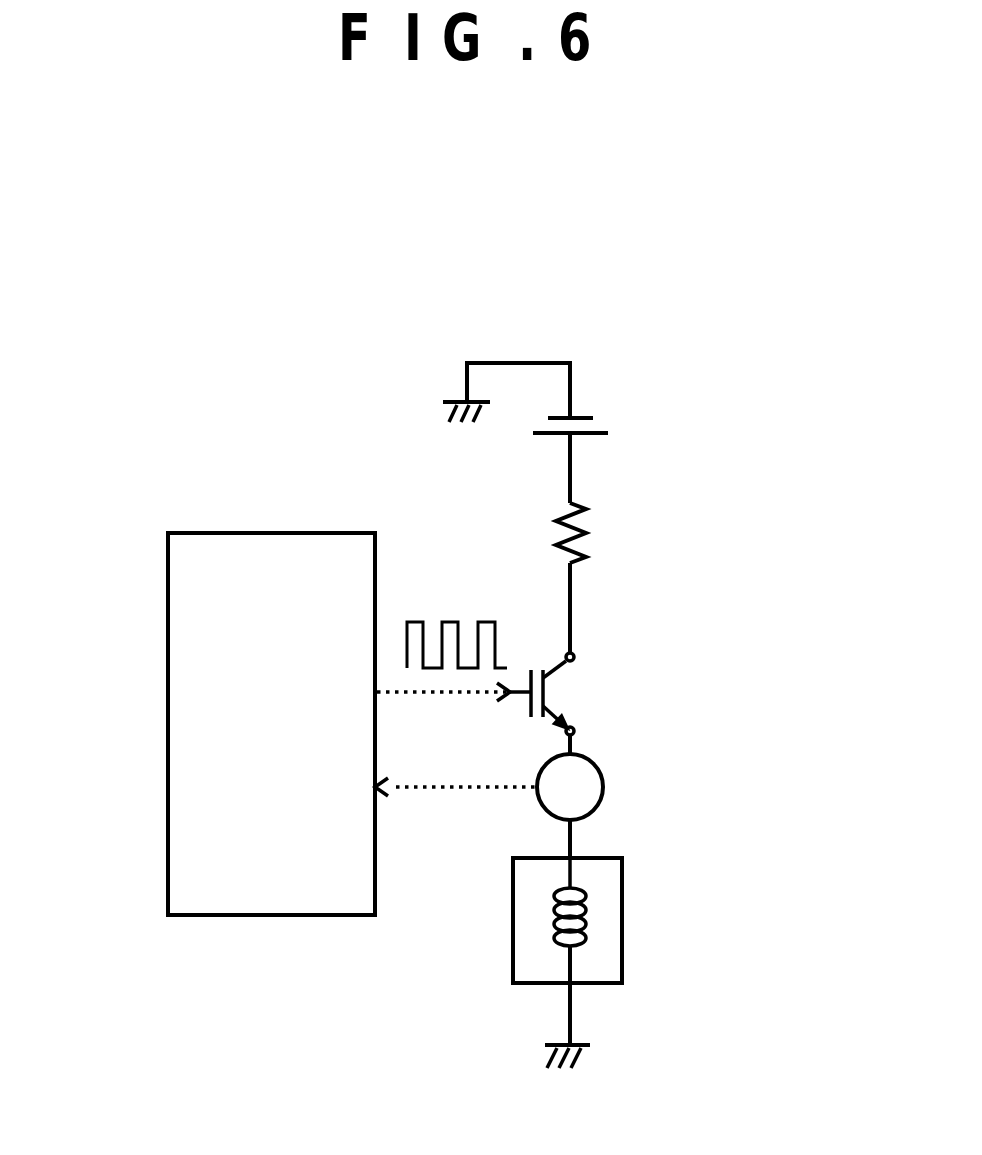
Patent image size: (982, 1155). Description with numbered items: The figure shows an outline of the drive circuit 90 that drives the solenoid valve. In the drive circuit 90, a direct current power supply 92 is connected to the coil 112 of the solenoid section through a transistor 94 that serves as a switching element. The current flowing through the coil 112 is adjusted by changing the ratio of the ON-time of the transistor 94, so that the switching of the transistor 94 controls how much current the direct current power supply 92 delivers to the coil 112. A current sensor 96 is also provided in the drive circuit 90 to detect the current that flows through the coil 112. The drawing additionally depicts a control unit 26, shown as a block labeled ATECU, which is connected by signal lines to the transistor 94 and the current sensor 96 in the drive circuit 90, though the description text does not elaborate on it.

The automatic transmission ECU (ATECU) 26 is at (168, 700).
The drive circuit 90 is at (780, 375).
The direct current power supply 92 is at (583, 415).
The transistor 94 is at (590, 673).
The current sensor 96 is at (600, 773).
The coil 112 is at (622, 920).